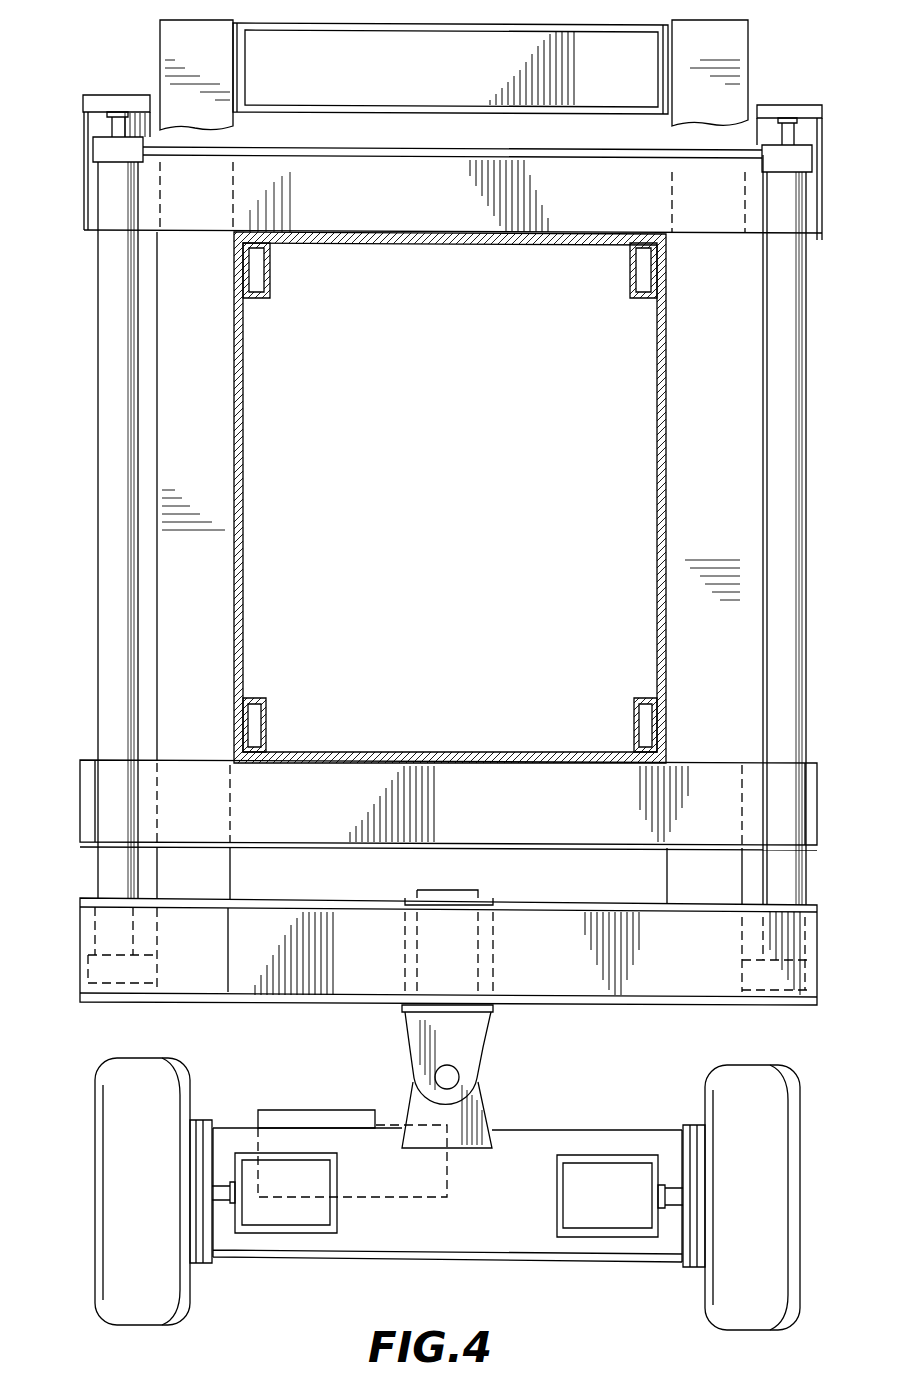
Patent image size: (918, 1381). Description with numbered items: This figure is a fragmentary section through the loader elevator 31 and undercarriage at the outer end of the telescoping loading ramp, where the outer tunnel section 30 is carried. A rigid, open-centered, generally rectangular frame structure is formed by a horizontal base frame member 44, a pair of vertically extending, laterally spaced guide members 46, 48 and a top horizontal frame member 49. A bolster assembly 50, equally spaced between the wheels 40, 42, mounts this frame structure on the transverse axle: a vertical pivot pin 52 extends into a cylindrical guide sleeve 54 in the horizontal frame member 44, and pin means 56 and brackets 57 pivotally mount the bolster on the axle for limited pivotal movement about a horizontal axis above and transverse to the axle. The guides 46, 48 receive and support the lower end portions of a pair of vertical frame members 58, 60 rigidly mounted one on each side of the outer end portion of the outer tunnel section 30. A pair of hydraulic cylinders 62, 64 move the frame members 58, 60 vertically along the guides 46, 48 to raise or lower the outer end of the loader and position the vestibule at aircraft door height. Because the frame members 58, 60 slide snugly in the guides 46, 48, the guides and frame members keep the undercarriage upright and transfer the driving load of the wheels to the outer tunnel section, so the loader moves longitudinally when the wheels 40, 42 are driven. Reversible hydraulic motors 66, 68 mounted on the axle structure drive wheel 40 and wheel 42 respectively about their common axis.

The outer tunnel section 30 is at (248, 640).
The loader elevator 31 is at (445, 500).
The wheel 40 is at (115, 1254).
The wheel 42 is at (770, 1265).
The horizontal base frame member 44 is at (578, 990).
The guide member 46 is at (203, 447).
The guide member 48 is at (697, 450).
The top horizontal frame member 49 is at (471, 80).
The bolster assembly 50 is at (443, 1076).
The vertical pivot pin 52 is at (482, 940).
The pin socket 54 is at (492, 970).
The pin means 56 is at (450, 1080).
The brackets 57 is at (470, 1120).
The vertical frame member 58 is at (473, 202).
The vertical frame member 60 is at (502, 812).
The hydraulic cylinder 62 is at (108, 562).
The hydraulic cylinder 64 is at (790, 568).
The reversible hydraulic motor 66 is at (310, 1182).
The reversible hydraulic motor 68 is at (580, 1185).